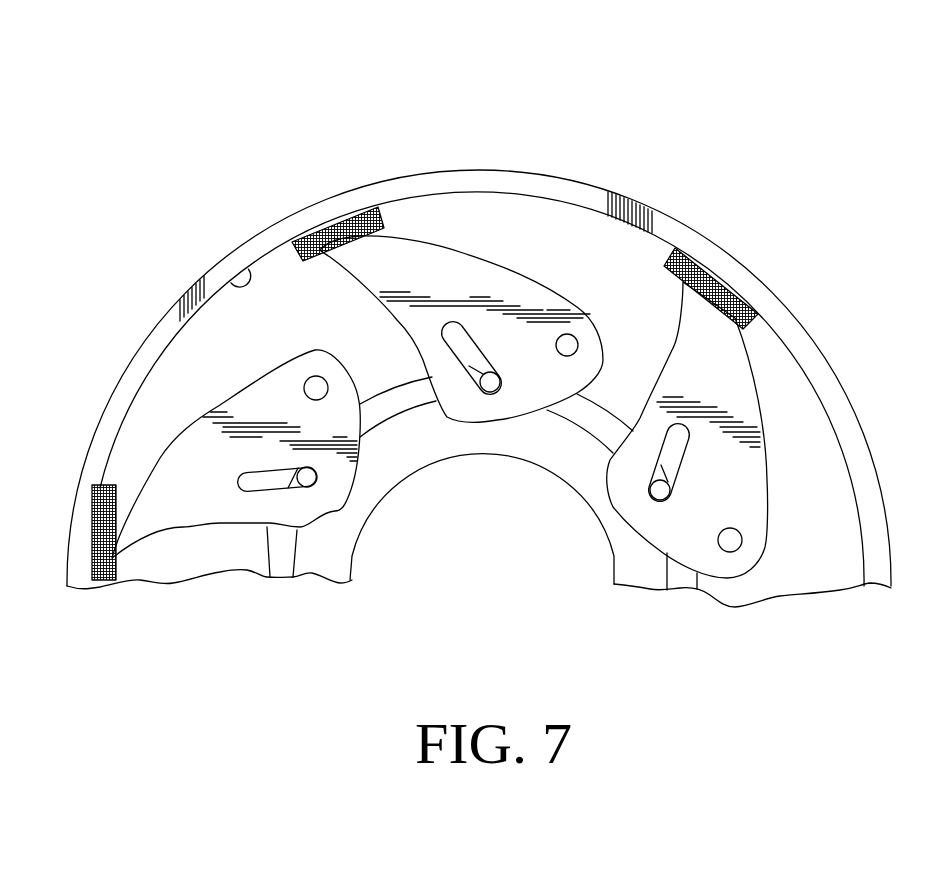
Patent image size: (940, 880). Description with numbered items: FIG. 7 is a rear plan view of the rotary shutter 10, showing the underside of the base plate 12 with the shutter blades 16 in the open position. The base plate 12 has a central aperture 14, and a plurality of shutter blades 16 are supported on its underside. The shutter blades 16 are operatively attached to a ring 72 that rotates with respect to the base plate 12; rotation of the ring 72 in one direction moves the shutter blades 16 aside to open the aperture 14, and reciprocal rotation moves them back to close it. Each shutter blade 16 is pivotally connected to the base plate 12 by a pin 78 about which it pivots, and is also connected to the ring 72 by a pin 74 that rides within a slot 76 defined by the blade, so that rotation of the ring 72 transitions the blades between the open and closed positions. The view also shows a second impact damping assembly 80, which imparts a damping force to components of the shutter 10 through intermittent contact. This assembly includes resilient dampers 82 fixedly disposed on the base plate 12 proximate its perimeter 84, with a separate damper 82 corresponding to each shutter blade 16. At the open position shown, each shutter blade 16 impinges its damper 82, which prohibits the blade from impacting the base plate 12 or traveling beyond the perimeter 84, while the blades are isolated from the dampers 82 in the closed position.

The rotary shutter 10 is at (476, 343).
The base plate 12 is at (580, 223).
The central aperture 14 is at (352, 556).
The shutter blades 16 is at (169, 518).
The ring 72 is at (608, 407).
The pins 74 is at (493, 393).
The slot 76 is at (466, 348).
The pins 78 is at (567, 335).
The second impact damping assembly 80 is at (480, 222).
The damper 82 is at (110, 485).
The perimeter 84 is at (236, 281).